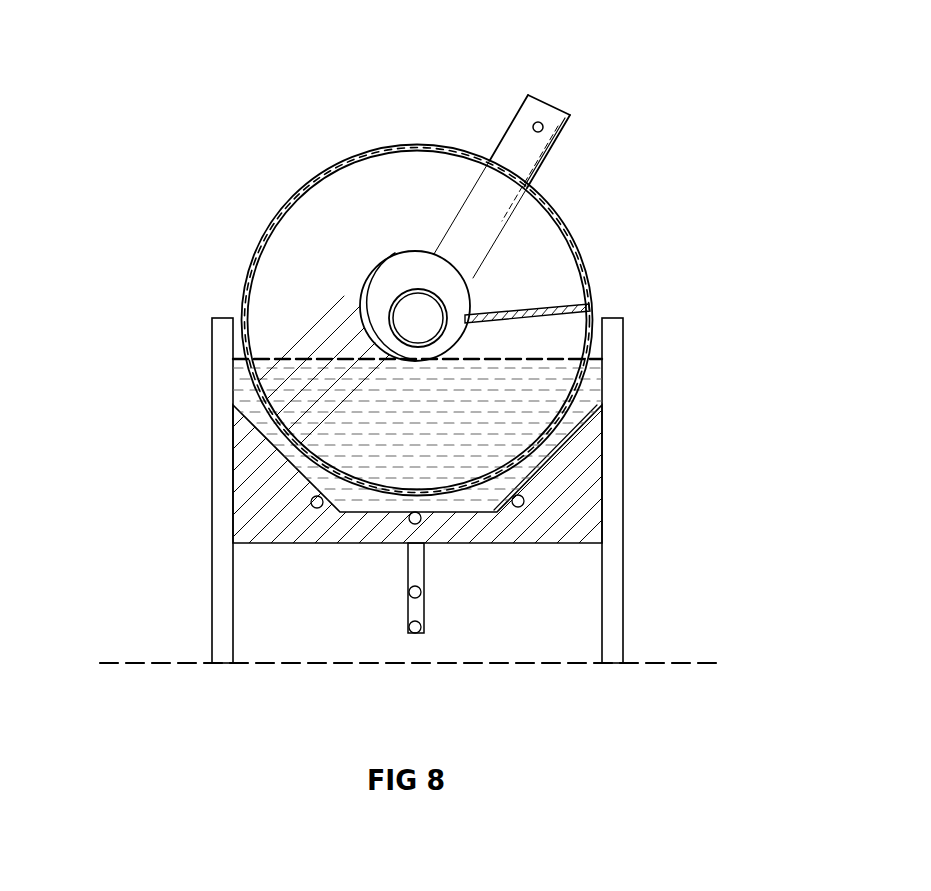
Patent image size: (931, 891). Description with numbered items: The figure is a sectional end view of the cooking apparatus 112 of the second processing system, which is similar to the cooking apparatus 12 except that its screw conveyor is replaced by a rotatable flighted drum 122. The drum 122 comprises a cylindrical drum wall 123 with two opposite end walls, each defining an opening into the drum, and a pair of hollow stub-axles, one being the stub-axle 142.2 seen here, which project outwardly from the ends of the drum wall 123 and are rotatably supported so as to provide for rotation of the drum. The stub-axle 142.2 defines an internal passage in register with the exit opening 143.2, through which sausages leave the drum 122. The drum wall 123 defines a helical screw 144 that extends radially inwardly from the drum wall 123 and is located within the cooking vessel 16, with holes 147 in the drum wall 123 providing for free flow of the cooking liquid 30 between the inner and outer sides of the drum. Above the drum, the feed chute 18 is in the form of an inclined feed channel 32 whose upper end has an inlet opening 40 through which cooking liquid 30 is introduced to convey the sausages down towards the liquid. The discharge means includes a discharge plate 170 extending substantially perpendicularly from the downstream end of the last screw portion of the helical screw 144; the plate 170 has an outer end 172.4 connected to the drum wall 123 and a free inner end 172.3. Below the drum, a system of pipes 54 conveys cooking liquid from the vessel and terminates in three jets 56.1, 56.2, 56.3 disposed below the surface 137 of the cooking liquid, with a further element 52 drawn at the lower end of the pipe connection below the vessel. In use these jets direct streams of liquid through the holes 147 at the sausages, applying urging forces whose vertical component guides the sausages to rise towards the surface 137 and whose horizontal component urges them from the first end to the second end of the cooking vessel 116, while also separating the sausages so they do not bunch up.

The cooking apparatus 12 is at (679, 387).
The cooking vessel 16 is at (580, 465).
The feed chute 18 is at (567, 145).
The cooking liquid 30 is at (367, 442).
The feed channel 32 is at (517, 160).
The inlet opening 40 is at (552, 108).
The pivot pin 52 is at (420, 622).
The system of pipes 54 is at (410, 590).
The jet 56.1 is at (312, 502).
The jet 56.2 is at (433, 514).
The jet 56.3 is at (523, 498).
The cooking apparatus 112 is at (372, 256).
The cooking vessel 116 is at (220, 593).
The rotatable flighted drum 122 is at (379, 138).
The drum wall 123 is at (453, 147).
The surface of the cooking liquid 137 is at (296, 344).
The hollow stub-axle 142.2 is at (402, 293).
The exit opening 143.2 is at (438, 305).
The helical screw 144 is at (342, 198).
The holes 147 is at (264, 210).
The discharge plate 170 is at (578, 350).
The free inner end 172.3 is at (452, 336).
The outer end 172.4 is at (608, 310).